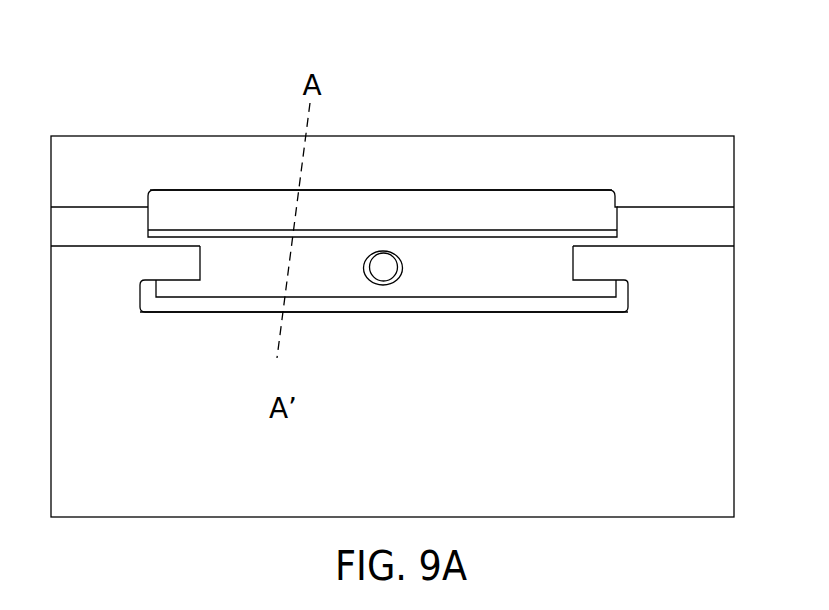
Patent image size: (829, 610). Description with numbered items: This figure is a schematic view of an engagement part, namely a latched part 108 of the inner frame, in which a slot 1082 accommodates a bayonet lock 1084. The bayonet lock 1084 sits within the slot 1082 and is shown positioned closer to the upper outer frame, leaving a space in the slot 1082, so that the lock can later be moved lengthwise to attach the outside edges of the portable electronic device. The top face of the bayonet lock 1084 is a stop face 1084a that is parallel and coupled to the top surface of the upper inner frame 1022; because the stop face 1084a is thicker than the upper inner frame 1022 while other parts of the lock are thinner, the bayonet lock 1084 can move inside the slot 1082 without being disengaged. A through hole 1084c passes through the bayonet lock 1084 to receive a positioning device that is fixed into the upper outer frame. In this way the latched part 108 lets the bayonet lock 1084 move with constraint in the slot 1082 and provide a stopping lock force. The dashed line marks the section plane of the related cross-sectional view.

The upper inner frame 1022 is at (640, 231).
The bayonet lock 1084 is at (437, 174).
The stop face 1084a is at (522, 198).
The through hole 1084c is at (383, 296).
The slot 1082 is at (452, 310).
The latched part 108 is at (136, 318).